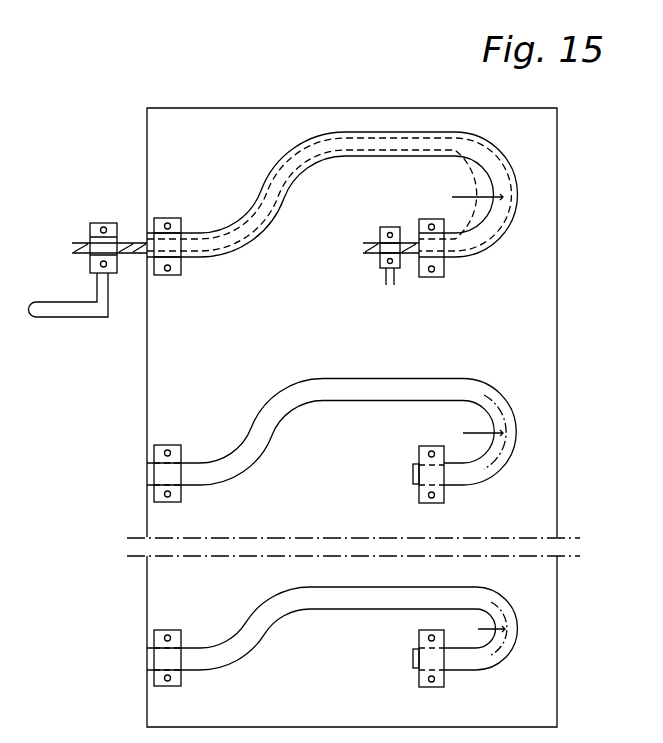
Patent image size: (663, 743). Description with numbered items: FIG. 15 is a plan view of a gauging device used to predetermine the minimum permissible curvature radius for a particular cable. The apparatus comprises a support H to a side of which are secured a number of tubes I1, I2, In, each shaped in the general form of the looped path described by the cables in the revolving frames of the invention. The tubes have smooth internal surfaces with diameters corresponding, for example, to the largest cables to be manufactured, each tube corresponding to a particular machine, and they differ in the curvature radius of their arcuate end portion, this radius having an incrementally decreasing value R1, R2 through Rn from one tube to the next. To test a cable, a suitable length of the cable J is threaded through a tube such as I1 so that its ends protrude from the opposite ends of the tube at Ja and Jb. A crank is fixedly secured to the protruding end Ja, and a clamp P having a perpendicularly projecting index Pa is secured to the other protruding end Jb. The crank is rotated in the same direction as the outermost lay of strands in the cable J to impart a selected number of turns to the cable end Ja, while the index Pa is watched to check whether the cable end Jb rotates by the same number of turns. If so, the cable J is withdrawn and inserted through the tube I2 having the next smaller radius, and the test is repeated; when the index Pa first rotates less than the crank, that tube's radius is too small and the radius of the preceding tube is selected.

The tube I1 is at (307, 153).
The tube I2 is at (428, 387).
The tube In is at (424, 593).
The curvature radius R1 is at (477, 190).
The curvature radius R2 is at (484, 432).
The curvature radius Rn is at (489, 628).
The cable J is at (133, 237).
The protruding end Ja is at (72, 243).
The protruding end Jb is at (365, 253).
The clamp P is at (381, 232).
The index Pa is at (390, 286).
The support H is at (151, 383).